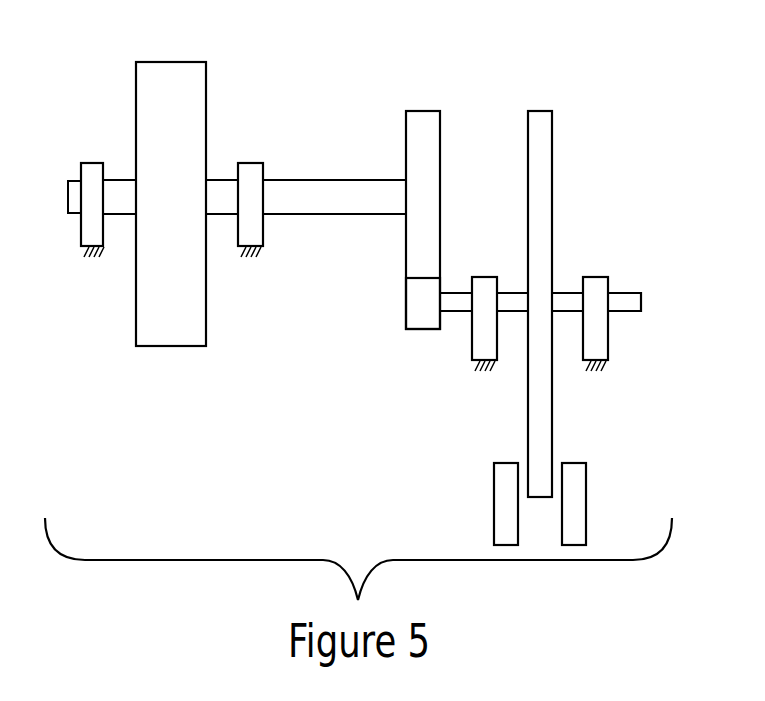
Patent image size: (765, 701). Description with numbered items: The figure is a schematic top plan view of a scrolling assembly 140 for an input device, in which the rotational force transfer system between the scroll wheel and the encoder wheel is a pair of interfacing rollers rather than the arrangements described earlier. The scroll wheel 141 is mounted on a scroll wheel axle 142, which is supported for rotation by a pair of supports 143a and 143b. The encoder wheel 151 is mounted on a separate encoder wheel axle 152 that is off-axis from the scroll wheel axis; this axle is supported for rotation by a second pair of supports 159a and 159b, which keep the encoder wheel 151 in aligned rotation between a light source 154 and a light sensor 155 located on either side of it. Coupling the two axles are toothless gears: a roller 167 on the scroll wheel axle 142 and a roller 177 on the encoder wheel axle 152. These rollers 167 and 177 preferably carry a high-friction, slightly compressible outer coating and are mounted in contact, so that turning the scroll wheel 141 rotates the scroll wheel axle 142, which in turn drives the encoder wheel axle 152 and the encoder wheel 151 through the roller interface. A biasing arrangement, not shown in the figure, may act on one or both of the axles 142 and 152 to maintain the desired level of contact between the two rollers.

The scrolling assembly 140 is at (338, 73).
The scroll wheel 141 is at (194, 88).
The scroll wheel axle 142 is at (323, 206).
The support 143a is at (93, 170).
The support 143b is at (250, 170).
The encoder wheel 151 is at (542, 196).
The encoder wheel axle 152 is at (557, 298).
The light source 154 is at (503, 518).
The light sensor 155 is at (578, 518).
The support 159a is at (478, 282).
The support 159b is at (602, 282).
The roller 167 is at (428, 196).
The roller 177 is at (415, 307).